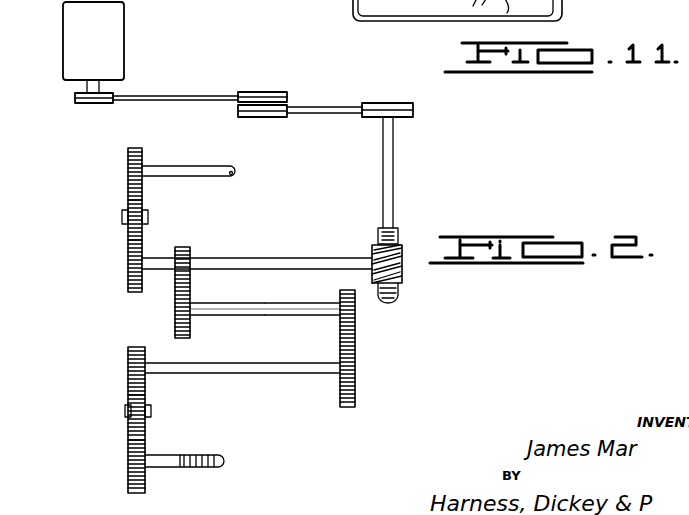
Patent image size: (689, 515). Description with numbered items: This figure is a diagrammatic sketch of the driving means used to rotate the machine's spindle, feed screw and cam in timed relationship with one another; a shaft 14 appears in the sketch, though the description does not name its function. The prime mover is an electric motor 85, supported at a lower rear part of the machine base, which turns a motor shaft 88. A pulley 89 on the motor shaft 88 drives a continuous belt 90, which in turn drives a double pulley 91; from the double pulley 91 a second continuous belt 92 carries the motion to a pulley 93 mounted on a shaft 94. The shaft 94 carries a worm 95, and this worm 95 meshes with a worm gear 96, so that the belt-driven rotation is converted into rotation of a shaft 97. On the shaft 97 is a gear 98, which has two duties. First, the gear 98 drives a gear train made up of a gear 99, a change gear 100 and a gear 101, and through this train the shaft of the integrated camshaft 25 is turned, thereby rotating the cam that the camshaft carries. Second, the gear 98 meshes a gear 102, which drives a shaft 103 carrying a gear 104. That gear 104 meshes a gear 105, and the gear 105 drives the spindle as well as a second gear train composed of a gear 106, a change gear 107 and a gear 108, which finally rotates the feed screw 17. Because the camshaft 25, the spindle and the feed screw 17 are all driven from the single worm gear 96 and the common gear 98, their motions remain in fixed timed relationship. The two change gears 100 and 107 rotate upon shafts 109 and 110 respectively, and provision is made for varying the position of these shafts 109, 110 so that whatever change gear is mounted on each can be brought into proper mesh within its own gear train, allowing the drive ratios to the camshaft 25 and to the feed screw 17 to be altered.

The shaft 14 is at (249, 366).
The feed screw 17 is at (178, 468).
The integrated camshaft 25 is at (224, 150).
The electric motor 85 is at (64, 26).
The motor shaft 88 is at (100, 89).
The pulley 89 is at (95, 104).
The continuous belt 90 is at (178, 96).
The double pulley 91 is at (286, 93).
The continuous belt 92 is at (337, 110).
The pulley 93 is at (410, 103).
The shaft 94 is at (394, 137).
The worm 95 is at (398, 233).
The worm gear 96 is at (403, 283).
The shaft 97 is at (303, 242).
The gear 98 is at (182, 247).
The gear 99 is at (128, 281).
The change gear 100 is at (145, 202).
The gear 101 is at (128, 158).
The gear 102 is at (191, 299).
The shaft 103 is at (266, 299).
The gear 104 is at (340, 294).
The gear 105 is at (340, 347).
The gear 106 is at (128, 357).
The change gear 107 is at (146, 393).
The gear 108 is at (128, 449).
The shaft 109 is at (149, 218).
The shaft 110 is at (152, 412).